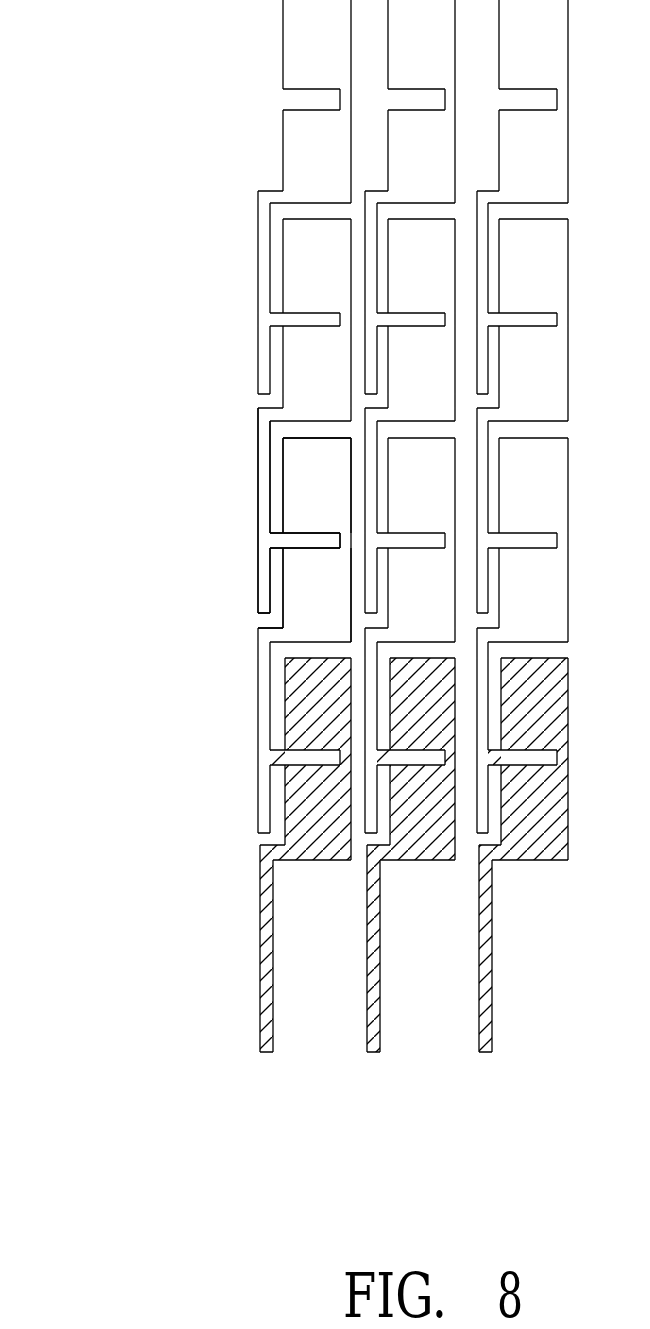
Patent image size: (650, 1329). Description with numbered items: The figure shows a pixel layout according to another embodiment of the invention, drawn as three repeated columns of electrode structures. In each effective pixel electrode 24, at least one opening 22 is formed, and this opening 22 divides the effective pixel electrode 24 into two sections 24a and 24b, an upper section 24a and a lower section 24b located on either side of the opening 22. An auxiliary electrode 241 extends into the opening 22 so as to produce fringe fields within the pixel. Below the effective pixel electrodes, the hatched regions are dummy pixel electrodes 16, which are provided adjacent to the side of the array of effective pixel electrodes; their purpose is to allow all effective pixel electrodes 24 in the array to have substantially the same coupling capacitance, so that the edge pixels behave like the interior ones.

The dummy pixel electrode 16 is at (285, 718).
The opening 22 is at (313, 533).
The effective pixel electrode 24 is at (165, 522).
The section 24a is at (284, 513).
The section 24b is at (284, 575).
The auxiliary electrode 241 is at (258, 488).